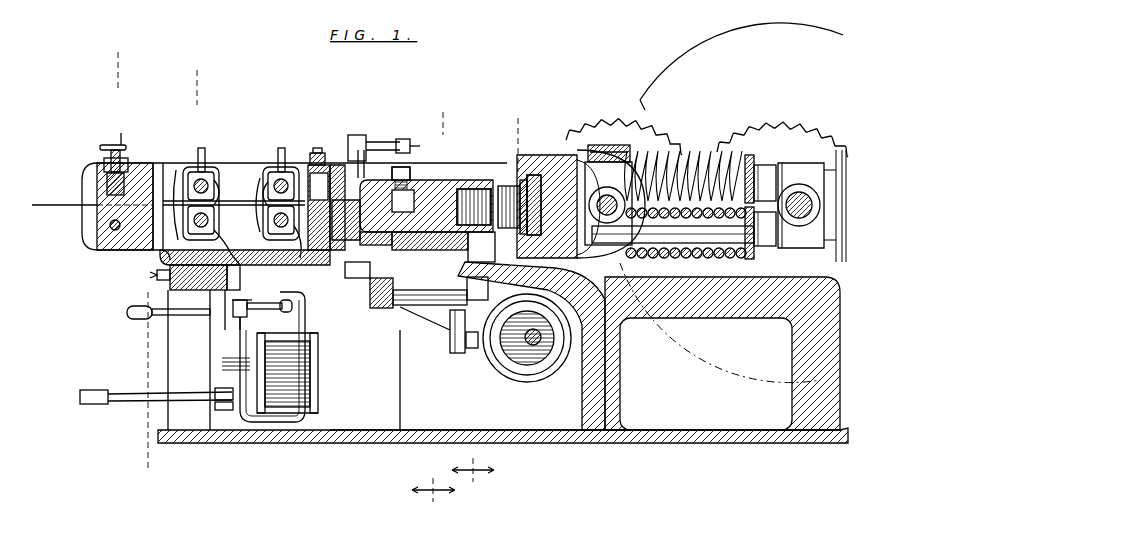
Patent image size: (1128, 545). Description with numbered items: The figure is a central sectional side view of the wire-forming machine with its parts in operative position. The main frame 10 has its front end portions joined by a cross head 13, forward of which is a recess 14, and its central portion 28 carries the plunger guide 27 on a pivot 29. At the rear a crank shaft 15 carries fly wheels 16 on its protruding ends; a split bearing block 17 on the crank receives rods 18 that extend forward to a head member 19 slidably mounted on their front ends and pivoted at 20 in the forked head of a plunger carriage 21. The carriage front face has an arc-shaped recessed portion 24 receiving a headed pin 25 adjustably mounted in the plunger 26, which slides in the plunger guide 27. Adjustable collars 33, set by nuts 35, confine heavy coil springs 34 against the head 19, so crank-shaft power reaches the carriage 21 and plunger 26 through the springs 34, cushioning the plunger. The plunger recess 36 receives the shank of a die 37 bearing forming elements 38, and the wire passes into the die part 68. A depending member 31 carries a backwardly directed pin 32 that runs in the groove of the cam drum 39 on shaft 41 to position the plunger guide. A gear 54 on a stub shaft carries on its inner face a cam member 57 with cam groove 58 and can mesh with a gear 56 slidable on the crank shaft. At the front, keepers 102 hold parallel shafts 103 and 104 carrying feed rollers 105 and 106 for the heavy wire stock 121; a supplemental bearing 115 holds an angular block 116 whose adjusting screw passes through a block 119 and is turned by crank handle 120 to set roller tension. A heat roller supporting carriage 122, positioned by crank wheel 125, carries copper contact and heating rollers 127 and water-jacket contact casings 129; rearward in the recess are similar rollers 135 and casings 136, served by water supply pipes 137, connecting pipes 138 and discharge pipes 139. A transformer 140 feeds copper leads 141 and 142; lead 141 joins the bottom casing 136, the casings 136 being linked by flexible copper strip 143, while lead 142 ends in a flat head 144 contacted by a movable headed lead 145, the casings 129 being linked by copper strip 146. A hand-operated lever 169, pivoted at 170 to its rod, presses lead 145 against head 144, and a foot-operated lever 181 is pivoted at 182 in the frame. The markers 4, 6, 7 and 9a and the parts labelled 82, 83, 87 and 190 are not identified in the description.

The section line 4- 4 is at (486, 303).
The section line 6- 6 is at (433, 309).
The section line 7- 7 is at (170, 275).
The section line 9a- 9a is at (123, 251).
The main frame 10 is at (503, 352).
The cross head 13 is at (302, 235).
The recess 14 is at (245, 227).
The crank shaft 15 is at (802, 238).
The fly wheels 16 is at (778, 25).
The split bearing block 17 is at (799, 184).
The rods 18 is at (760, 168).
The head member 19 is at (605, 143).
The pivot 20 is at (586, 256).
The plunger carriage 21 is at (560, 153).
The arc-shaped recessed portion 24 is at (535, 173).
The headed pin 25 is at (509, 184).
The plunger 26 is at (470, 179).
The plunger guide 27 is at (430, 249).
The central portion 28 is at (356, 268).
The pivot 29 is at (382, 313).
The depending member 31 is at (450, 326).
The backwardly directed pin 32 is at (468, 346).
The adjustable collars 33 is at (748, 153).
The heavy coil springs 34 is at (692, 152).
The nuts 35 is at (761, 166).
The recess 36 is at (417, 189).
The die 37 is at (392, 246).
The forming elements 38 is at (351, 222).
The cam drum 39 is at (512, 374).
The shaft 41 is at (536, 342).
The gear 54 is at (656, 130).
The gear 56 is at (820, 140).
The cam member 57 is at (640, 100).
The cam groove 58 is at (598, 145).
The die part 68 is at (319, 207).
The clamp 82 is at (362, 134).
The nut 83 is at (404, 139).
The arm 87 is at (382, 140).
The forwardly directed keepers 102 is at (90, 172).
The shaft 103 is at (114, 203).
The shaft 104 is at (95, 248).
The feed roller 105 is at (106, 183).
The feed roller 106 is at (110, 225).
The supplemental bearing 115 is at (135, 168).
The angular block 116 is at (104, 163).
The block 119 is at (122, 143).
The crank handle 120 is at (115, 143).
The metal stock 121 is at (34, 204).
The heat roller supporting carriage 122 is at (172, 289).
The crank wheel 125 is at (150, 276).
The copper contact and heating rollers 127 is at (222, 178).
The contact casings 129 is at (205, 170).
The copper contact and heating rollers 135 is at (268, 168).
The contact casings 136 is at (290, 168).
The flexible water supply pipes 137 is at (201, 146).
The flexible pipes 138 is at (264, 186).
The water discharge pipes 139 is at (262, 238).
The transformer 140 is at (318, 364).
The copper lead 141 is at (306, 308).
The copper lead 142 is at (238, 320).
The flexible copper strip 143 is at (322, 155).
The flat head 144 is at (255, 308).
The movable headed lead 145 is at (240, 242).
The flexible copper strip 146 is at (177, 168).
The hand-operated lever 169 is at (126, 314).
The pivot 170 is at (290, 302).
The foot-operated lever 181 is at (120, 402).
The pivot 182 is at (215, 390).
The wires 190 is at (222, 360).